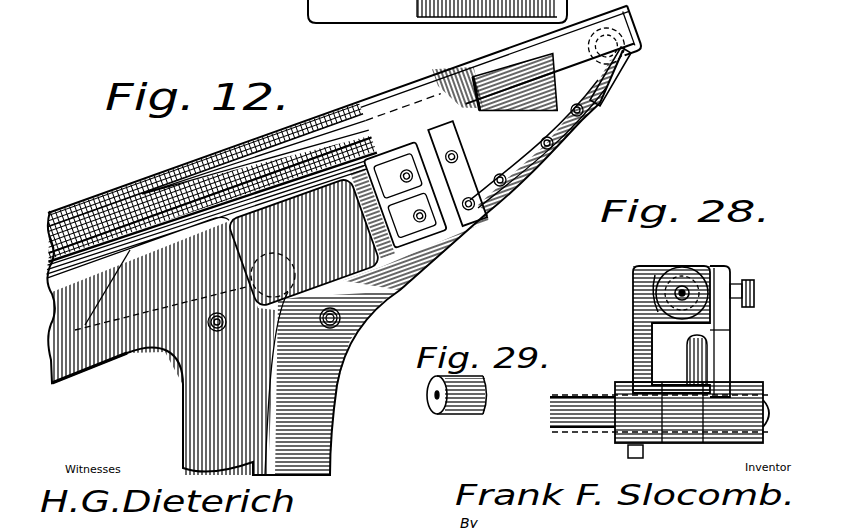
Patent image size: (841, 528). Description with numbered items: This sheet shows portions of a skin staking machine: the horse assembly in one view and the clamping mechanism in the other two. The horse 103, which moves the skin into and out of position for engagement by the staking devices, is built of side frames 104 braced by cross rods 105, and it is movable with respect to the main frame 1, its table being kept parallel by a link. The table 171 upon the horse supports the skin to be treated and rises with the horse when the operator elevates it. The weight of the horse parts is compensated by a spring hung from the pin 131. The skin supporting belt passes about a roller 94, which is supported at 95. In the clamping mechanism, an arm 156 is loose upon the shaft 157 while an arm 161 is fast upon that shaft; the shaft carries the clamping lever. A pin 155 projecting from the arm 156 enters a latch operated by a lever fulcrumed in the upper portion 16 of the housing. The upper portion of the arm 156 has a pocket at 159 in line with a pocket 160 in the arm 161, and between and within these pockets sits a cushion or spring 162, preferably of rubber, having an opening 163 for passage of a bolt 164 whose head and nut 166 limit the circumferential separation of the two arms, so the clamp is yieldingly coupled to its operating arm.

In FIG. 12, the main frame 1 is at (210, 393).
In FIG. 12, the roller 94 is at (632, 52).
In FIG. 12, the roller support 95 is at (598, 90).
In FIG. 12, the horse 103 is at (410, 272).
In FIG. 12, the side frame 104 is at (330, 467).
In FIG. 12, the cross rod 105 is at (341, 321).
In FIG. 12, the pin 131 is at (217, 313).
In FIG. 12, the table 171 is at (342, 144).
In FIG. 28, the upper portion of the housing 16 is at (690, 356).
In FIG. 28, the pin 155 is at (746, 284).
In FIG. 28, the arm 156 is at (726, 340).
In FIG. 28, the shaft 157 is at (600, 412).
In FIG. 28, the pocket 159 is at (716, 274).
In FIG. 28, the pocket 160 is at (672, 283).
In FIG. 28, the arm 161 is at (645, 345).
In FIG. 28, the cushion or spring 162 is at (684, 286).
In FIG. 29, the cushion or spring 162 is at (470, 402).
In FIG. 29, the opening 163 is at (434, 396).
In FIG. 28, the bolt 164 is at (650, 279).
In FIG. 28, the nut 166 is at (640, 297).